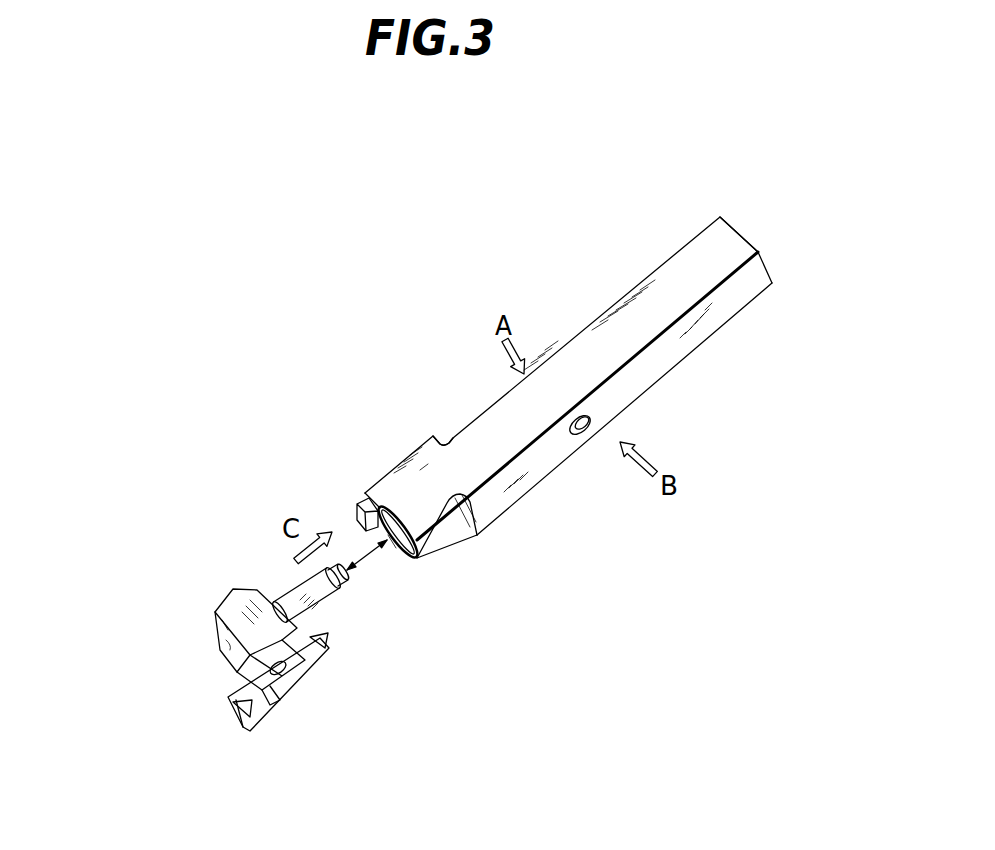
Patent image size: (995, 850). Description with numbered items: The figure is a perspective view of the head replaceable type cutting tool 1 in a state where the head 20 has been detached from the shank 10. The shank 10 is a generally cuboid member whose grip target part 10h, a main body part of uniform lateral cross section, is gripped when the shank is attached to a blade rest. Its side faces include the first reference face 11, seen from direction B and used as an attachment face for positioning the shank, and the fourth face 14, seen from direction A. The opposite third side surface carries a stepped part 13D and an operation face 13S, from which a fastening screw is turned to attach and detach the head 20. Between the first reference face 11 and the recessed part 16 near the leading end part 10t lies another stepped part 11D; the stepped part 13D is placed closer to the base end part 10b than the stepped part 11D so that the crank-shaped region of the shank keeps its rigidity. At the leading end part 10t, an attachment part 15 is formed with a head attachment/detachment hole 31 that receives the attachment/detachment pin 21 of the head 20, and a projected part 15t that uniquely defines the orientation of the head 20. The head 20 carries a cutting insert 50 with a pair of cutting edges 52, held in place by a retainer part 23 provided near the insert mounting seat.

The head replaceable type cutting tool 1 is at (290, 370).
The shank 10 is at (522, 427).
The base end part 10b is at (677, 230).
The leading end part 10t is at (377, 408).
The grip target part 10h is at (570, 353).
The first reference face 11 is at (633, 387).
The stepped part 11D is at (475, 545).
The stepped part 13D is at (443, 424).
The operation face 13S is at (392, 460).
The fourth face 14 is at (598, 337).
The attachment part 15 is at (425, 573).
The projected part 15t is at (357, 517).
The recessed part 16 is at (467, 572).
The head 20 is at (227, 603).
The attachment/detachment pin 21 is at (295, 597).
The retainer part 23 is at (267, 707).
The head attachment/detachment hole 31 is at (388, 535).
The cutting insert 50 is at (283, 698).
The cutting edge 52 is at (232, 702).